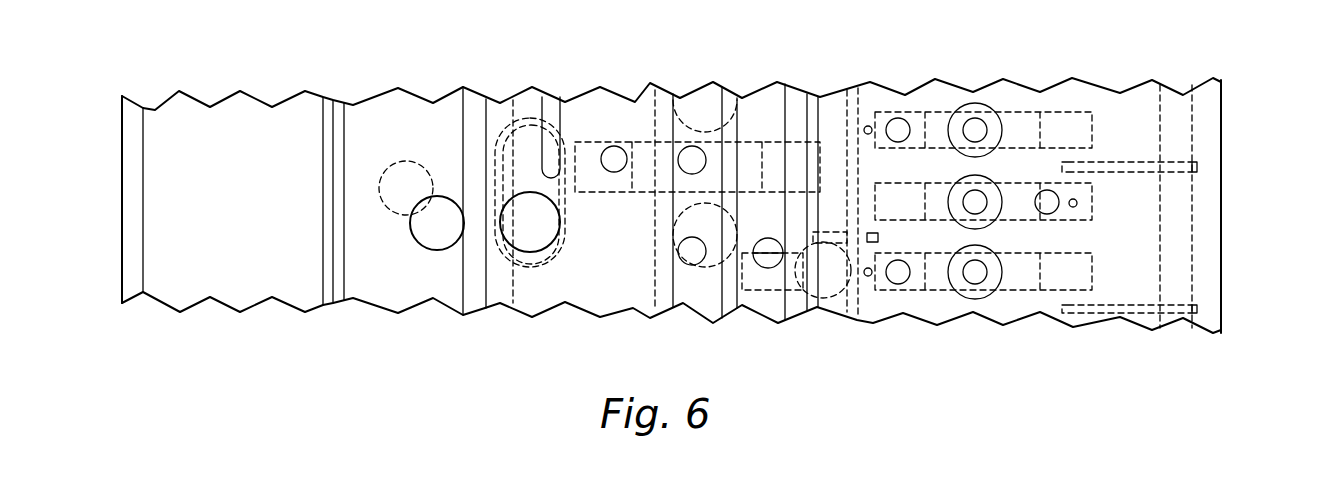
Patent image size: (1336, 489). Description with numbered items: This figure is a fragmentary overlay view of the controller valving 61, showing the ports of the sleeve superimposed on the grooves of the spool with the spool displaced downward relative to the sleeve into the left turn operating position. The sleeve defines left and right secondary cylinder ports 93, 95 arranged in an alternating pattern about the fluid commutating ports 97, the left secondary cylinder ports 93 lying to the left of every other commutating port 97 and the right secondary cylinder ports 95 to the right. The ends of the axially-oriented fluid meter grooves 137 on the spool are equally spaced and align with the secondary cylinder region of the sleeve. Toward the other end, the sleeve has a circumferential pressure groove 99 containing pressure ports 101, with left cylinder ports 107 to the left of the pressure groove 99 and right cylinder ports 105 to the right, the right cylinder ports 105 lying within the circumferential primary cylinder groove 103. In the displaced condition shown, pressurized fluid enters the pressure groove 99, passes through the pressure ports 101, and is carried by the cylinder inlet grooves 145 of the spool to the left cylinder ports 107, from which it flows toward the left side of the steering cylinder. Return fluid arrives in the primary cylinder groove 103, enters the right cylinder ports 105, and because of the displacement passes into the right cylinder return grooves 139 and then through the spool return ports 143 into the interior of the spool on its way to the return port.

The controller valving 61 is at (1243, 92).
The left secondary cylinder ports 93 is at (900, 118).
The right secondary cylinder ports 95 is at (1052, 212).
The fluid commutating ports 97 is at (983, 104).
The circumferential pressure groove 99 is at (712, 298).
The pressure ports 101 is at (678, 158).
The circumferential primary cylinder groove 103 is at (780, 227).
The right cylinder ports 105 is at (766, 268).
The left cylinder ports 107 is at (613, 146).
The fluid meter grooves 137 is at (1092, 135).
The right cylinder return grooves 139 is at (770, 290).
The spool return ports 143 is at (840, 292).
The cylinder inlet grooves 145 is at (750, 142).